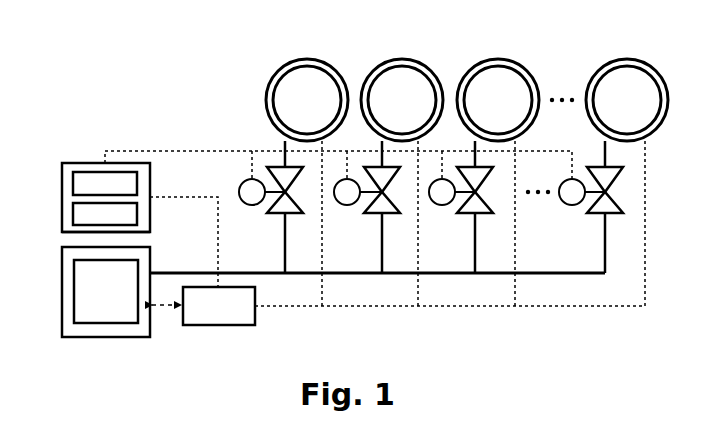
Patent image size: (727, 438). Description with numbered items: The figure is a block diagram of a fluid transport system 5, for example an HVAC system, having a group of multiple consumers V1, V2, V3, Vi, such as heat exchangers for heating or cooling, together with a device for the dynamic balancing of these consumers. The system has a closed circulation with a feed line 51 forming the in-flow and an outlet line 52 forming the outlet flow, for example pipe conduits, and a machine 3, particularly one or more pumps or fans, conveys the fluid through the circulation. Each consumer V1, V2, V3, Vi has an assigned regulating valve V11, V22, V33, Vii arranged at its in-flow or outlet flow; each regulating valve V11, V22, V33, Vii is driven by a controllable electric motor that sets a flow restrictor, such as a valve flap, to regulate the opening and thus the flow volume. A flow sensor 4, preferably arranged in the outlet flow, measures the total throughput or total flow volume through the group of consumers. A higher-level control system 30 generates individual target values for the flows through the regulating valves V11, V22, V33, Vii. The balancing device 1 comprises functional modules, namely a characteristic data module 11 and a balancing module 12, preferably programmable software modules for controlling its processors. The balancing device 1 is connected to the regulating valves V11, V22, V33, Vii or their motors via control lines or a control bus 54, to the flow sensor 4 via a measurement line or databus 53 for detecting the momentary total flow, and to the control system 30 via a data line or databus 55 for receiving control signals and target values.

The balancing device 1 is at (71, 162).
The characteristic data module 11 is at (74, 183).
The balancing module 12 is at (74, 212).
The data line or databus 55 is at (108, 238).
The machine 3 is at (75, 303).
The higher-level control system 30 is at (78, 333).
The flow sensor 4 is at (200, 326).
The fluid transport system 5 is at (193, 126).
The feed line 51 is at (188, 270).
The outlet line 52 is at (287, 309).
The measurement line or databus 53 is at (183, 197).
The control lines or control bus 54 is at (148, 150).
The consumer V1 is at (273, 64).
The consumer V2 is at (370, 64).
The consumer V3 is at (465, 64).
The consumer Vi is at (594, 62).
The regulating valve V11 is at (273, 217).
The regulating valve V22 is at (370, 217).
The regulating valve V33 is at (463, 217).
The regulating valve Vii is at (595, 217).